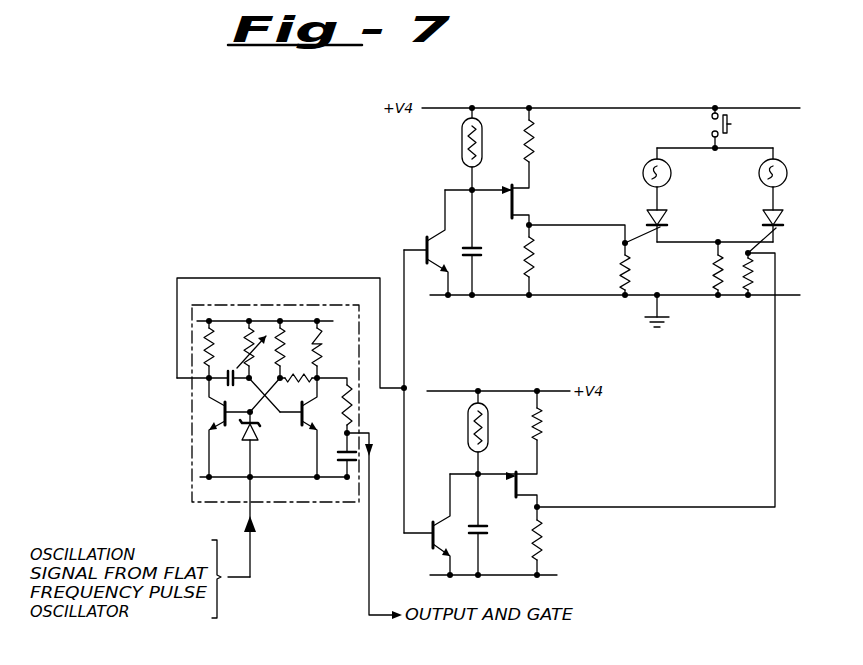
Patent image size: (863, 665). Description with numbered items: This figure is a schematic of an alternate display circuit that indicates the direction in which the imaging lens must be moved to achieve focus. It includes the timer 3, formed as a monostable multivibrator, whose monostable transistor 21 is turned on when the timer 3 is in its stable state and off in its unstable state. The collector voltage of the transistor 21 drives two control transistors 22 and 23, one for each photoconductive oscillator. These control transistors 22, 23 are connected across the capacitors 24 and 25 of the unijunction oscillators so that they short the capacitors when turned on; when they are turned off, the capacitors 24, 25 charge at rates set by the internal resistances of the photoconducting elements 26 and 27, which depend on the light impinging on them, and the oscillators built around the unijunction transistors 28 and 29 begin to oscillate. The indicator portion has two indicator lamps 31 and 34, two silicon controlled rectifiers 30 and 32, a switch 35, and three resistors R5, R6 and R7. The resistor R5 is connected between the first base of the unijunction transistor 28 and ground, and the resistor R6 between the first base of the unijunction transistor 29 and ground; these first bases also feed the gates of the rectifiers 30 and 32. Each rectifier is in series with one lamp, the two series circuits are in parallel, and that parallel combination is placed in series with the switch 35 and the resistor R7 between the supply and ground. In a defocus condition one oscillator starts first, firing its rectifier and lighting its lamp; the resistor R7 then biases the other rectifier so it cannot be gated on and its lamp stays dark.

The timer 3 is at (276, 448).
The monostable transistor 21 is at (212, 413).
The control transistor 22 is at (428, 236).
The control transistor 23 is at (450, 532).
The capacitor 24 is at (481, 252).
The capacitor 25 is at (488, 530).
The photoconducting element 26 is at (462, 142).
The photoconducting element 27 is at (468, 424).
The unijunction transistor 28 is at (520, 199).
The unijunction transistor 29 is at (522, 483).
The silicon controlled rectifier 30 is at (668, 222).
The indicator lamp 31 is at (672, 176).
The silicon controlled rectifier 32 is at (785, 220).
The indicator lamp 34 is at (788, 173).
The switch 35 is at (711, 122).
The resistor R5 is at (620, 266).
The resistor R6 is at (756, 270).
The resistor R7 is at (713, 268).